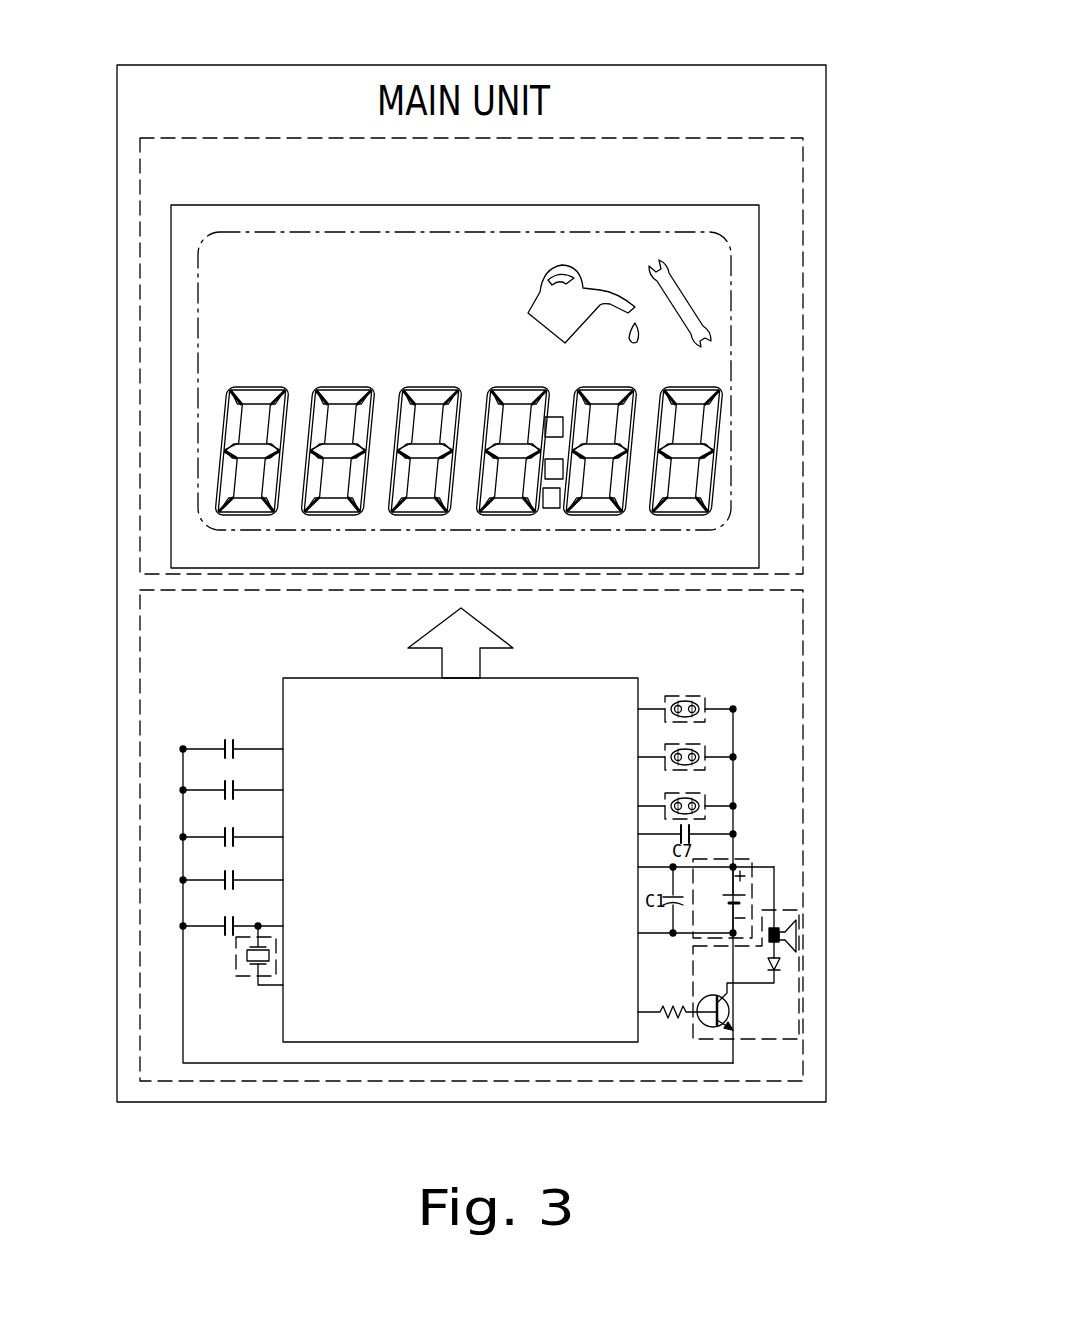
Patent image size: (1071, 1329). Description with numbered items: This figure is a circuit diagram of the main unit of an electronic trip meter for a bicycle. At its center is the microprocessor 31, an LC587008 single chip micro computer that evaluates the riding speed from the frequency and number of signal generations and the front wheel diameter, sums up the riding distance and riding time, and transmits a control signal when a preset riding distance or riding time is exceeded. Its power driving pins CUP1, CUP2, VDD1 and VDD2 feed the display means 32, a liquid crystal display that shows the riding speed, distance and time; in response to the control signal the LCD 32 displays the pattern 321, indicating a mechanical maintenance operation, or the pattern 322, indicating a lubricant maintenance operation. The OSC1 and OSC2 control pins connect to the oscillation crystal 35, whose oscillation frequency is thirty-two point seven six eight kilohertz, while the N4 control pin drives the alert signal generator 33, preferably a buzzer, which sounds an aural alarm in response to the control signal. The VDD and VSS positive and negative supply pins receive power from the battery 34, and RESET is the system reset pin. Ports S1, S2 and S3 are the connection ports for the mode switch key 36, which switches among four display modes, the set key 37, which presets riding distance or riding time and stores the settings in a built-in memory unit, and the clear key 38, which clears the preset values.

The microprocessor 31 is at (347, 712).
The display means 32 is at (471, 356).
The pattern 321 is at (680, 300).
The pattern 322 is at (567, 300).
The alert signal generator 33 is at (767, 1013).
The battery 34 is at (757, 863).
The oscillation crystal 35 is at (240, 975).
The mode switch key 36 is at (705, 700).
The set key 37 is at (705, 752).
The clear key 38 is at (705, 797).